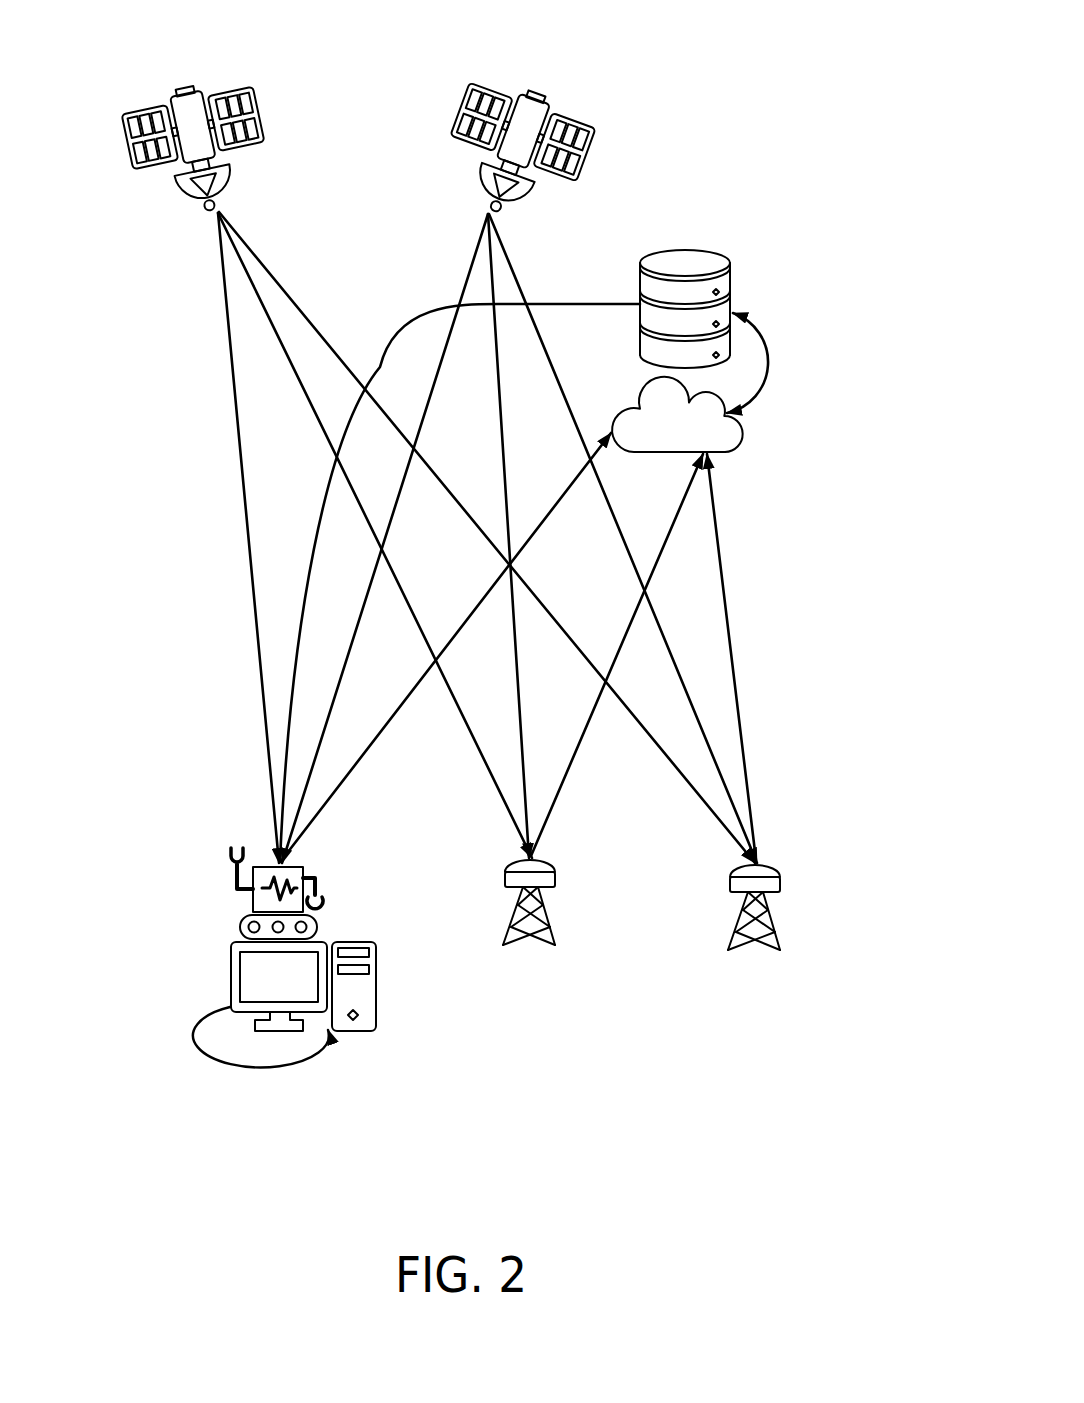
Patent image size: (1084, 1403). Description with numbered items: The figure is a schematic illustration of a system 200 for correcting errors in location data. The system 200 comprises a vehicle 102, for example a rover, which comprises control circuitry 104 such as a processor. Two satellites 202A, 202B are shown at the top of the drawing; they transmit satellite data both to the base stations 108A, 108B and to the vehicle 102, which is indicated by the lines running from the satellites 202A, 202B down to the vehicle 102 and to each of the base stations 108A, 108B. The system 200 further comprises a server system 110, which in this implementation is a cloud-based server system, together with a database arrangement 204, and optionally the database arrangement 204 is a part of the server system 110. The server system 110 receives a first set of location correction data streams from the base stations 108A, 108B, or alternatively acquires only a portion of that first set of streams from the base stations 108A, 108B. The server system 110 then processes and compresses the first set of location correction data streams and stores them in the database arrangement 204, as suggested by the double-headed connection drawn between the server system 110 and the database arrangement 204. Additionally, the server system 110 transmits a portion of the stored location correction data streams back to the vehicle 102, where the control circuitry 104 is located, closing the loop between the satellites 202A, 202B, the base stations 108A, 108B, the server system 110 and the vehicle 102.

The system 200 is at (776, 68).
The satellite 202A is at (235, 178).
The satellite 202B is at (575, 182).
The database arrangement 204 is at (725, 298).
The server system 110 is at (747, 431).
The vehicle 102 is at (253, 890).
The control circuitry 104 is at (230, 970).
The base station 108A is at (548, 925).
The base station 108B is at (773, 917).